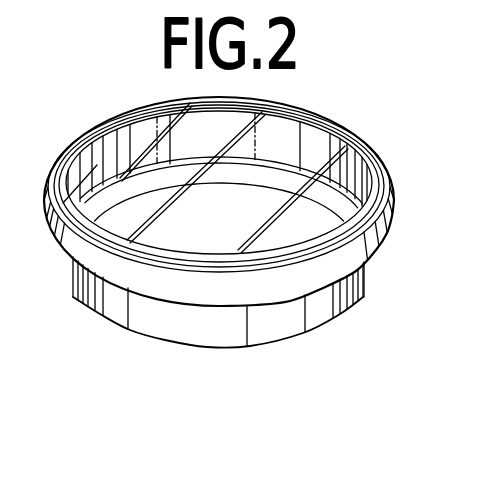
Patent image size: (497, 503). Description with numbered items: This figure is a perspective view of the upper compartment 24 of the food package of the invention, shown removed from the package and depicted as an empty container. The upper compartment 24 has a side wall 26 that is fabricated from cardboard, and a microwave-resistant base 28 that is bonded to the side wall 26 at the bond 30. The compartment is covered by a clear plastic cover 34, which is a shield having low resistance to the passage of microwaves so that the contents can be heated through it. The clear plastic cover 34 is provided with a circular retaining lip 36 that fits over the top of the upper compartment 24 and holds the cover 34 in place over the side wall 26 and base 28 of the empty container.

The upper compartment 24 is at (205, 356).
The side wall 26 is at (338, 297).
The microwave-resistant base 28 is at (225, 250).
The bond 30 is at (112, 178).
The clear plastic cover 34 is at (317, 152).
The circular retaining lip 36 is at (108, 231).